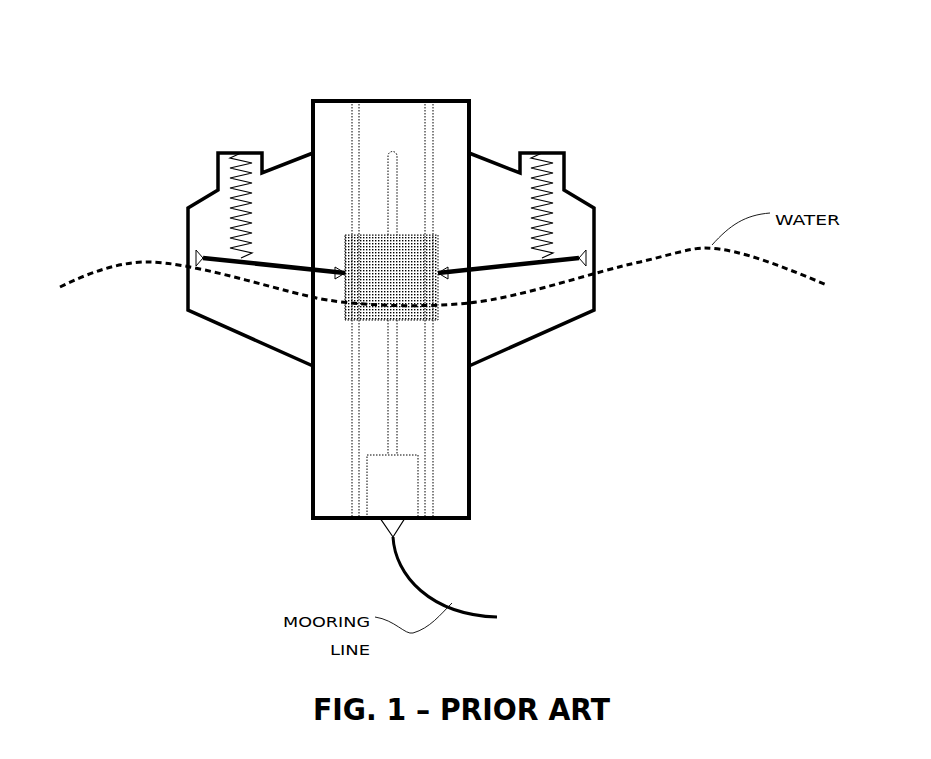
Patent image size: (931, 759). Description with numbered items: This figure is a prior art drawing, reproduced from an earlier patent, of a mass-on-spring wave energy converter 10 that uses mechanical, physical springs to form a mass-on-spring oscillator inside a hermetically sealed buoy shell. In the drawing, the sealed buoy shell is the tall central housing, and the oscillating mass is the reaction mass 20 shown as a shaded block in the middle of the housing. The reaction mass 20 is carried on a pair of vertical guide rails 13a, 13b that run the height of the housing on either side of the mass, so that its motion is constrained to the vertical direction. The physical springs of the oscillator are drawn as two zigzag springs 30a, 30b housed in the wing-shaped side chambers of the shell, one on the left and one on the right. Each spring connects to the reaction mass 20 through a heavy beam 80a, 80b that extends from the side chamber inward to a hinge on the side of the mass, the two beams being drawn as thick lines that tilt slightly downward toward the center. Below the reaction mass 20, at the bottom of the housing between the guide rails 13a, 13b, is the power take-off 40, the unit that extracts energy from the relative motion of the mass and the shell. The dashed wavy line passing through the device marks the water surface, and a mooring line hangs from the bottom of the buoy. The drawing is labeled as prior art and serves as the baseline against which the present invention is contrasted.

The wave energy converter (prior art) 10 is at (400, 100).
The spring 30a is at (232, 220).
The spring 30b is at (555, 210).
The beam 80a is at (283, 275).
The beam 80b is at (490, 275).
The guide rail 13a is at (352, 378).
The guide rail 13b is at (432, 442).
The reaction mass 20 is at (430, 318).
The power take-off 40 is at (388, 492).